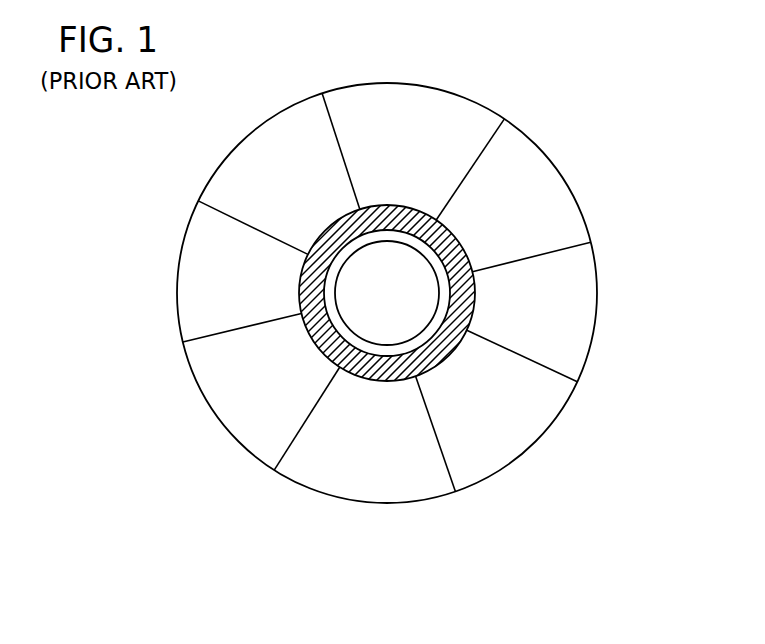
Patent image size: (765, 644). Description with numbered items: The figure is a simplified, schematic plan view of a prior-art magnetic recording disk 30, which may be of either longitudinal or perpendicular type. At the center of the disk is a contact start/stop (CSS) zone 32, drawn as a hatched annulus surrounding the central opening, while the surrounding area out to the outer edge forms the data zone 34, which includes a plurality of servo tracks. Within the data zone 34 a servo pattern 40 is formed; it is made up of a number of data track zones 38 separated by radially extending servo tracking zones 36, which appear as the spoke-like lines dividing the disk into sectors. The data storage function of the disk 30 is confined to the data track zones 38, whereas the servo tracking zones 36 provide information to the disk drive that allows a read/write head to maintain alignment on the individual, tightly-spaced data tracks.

The magnetic recording disk 30 is at (582, 122).
The contact start/stop (CSS) zone 32 is at (477, 305).
The data zone 34 is at (517, 402).
The servo tracking zones 36 is at (317, 168).
The data track zones 38 is at (315, 133).
The servo pattern 40 is at (240, 282).